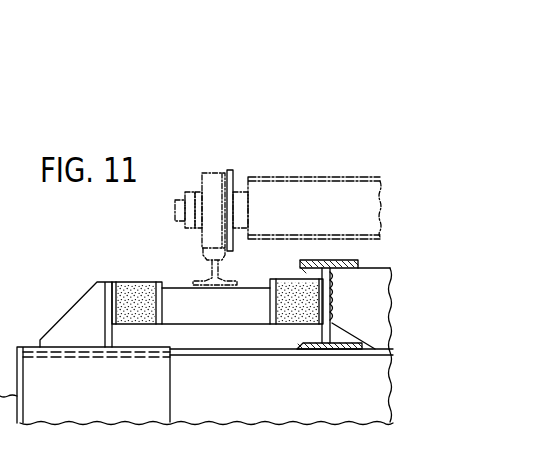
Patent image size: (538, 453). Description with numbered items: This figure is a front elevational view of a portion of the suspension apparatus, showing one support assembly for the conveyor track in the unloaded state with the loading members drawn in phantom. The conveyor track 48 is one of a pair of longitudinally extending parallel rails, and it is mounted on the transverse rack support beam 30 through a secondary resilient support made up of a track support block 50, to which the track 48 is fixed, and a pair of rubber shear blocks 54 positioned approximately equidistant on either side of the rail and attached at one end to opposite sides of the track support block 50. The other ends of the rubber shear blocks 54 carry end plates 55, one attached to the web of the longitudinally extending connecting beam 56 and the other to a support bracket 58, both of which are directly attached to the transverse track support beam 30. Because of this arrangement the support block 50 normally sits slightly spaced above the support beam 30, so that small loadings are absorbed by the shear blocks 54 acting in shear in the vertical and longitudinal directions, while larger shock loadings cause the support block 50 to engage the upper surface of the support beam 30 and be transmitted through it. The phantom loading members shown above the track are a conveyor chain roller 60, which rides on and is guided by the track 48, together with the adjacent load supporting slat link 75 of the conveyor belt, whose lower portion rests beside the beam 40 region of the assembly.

The rack support beam 30 is at (293, 412).
The base plate 40 is at (160, 397).
The conveyor track 48 is at (212, 272).
The track support block 50 is at (215, 318).
The rubber shear blocks 54 is at (128, 280).
The end plates 55 is at (322, 328).
The connecting beam 56 is at (332, 302).
The support bracket 58 is at (69, 312).
The conveyor chain rollers 60 is at (217, 172).
The slat link 75 is at (317, 177).